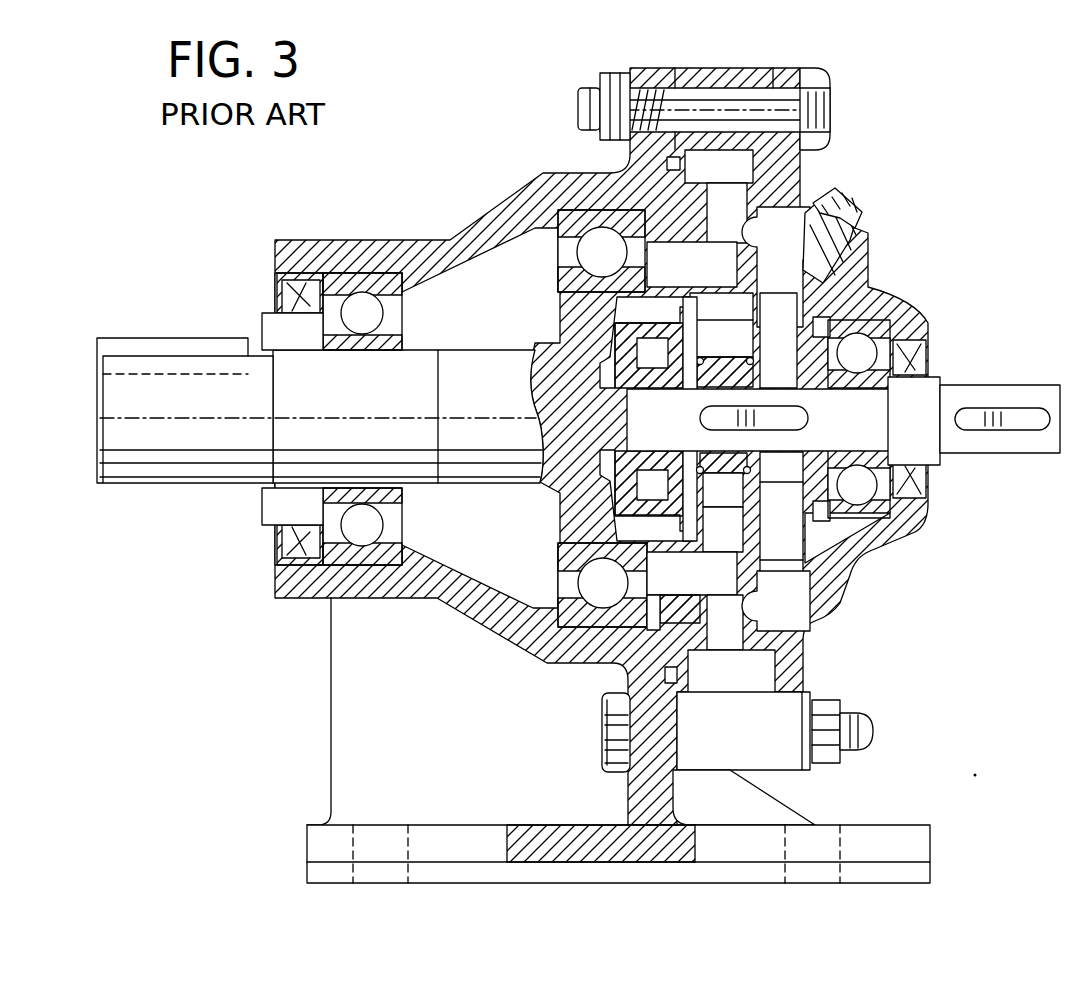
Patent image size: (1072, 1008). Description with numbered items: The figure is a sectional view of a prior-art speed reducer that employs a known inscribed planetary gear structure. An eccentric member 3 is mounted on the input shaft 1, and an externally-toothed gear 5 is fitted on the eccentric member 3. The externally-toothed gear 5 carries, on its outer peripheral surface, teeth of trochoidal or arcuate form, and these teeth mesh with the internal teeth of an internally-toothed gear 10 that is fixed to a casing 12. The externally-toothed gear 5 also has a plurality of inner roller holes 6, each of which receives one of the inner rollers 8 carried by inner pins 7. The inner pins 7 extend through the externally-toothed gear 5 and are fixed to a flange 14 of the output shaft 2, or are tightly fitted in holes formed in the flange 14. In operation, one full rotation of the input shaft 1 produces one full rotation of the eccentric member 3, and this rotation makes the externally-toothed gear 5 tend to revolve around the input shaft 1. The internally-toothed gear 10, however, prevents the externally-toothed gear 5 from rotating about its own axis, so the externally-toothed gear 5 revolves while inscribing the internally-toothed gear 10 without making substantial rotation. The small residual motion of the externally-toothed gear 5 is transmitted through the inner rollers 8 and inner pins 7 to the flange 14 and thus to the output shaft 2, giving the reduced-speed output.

The input shaft 1 is at (958, 392).
The output shaft 2 is at (418, 360).
The eccentric member 3 is at (747, 377).
The externally-toothed gear 5 is at (735, 303).
The inner roller holes 6 is at (747, 600).
The inner pins 7 is at (727, 570).
The inner rollers 8 is at (728, 547).
The internally-toothed gear 10 is at (757, 750).
The casing 12 is at (635, 808).
The flange 14 is at (663, 612).